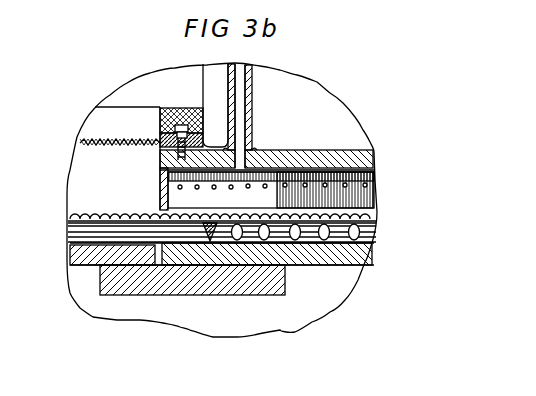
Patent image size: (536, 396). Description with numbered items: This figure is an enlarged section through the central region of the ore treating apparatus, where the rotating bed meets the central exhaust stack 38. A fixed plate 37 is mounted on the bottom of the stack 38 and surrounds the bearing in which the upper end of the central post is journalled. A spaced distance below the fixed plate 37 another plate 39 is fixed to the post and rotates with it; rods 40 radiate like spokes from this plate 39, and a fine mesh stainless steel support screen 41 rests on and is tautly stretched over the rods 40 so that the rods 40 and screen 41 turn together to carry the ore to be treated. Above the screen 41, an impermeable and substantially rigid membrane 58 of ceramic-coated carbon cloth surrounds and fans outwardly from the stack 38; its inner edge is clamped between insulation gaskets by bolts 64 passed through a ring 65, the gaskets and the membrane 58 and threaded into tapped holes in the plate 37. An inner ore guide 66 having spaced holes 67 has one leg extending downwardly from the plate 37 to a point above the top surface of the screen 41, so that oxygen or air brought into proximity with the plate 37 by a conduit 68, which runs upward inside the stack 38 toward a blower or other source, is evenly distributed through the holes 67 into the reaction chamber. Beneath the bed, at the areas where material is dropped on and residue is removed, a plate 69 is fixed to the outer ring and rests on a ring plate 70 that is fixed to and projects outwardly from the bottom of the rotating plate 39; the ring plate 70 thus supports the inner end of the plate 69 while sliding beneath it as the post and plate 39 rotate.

The fixed plate 37 is at (341, 150).
The central exhaust stack 38 is at (320, 125).
The plate 39 is at (347, 238).
The rods 40 is at (343, 246).
The support screen 41 is at (103, 207).
The membrane 58 is at (131, 147).
The bolts 64 is at (184, 124).
The ring 65 is at (175, 128).
The inner ore guide 66 is at (160, 140).
The holes 67 is at (310, 186).
The conduit 68 is at (252, 96).
The plate 69 is at (93, 262).
The ring plate 70 is at (204, 284).